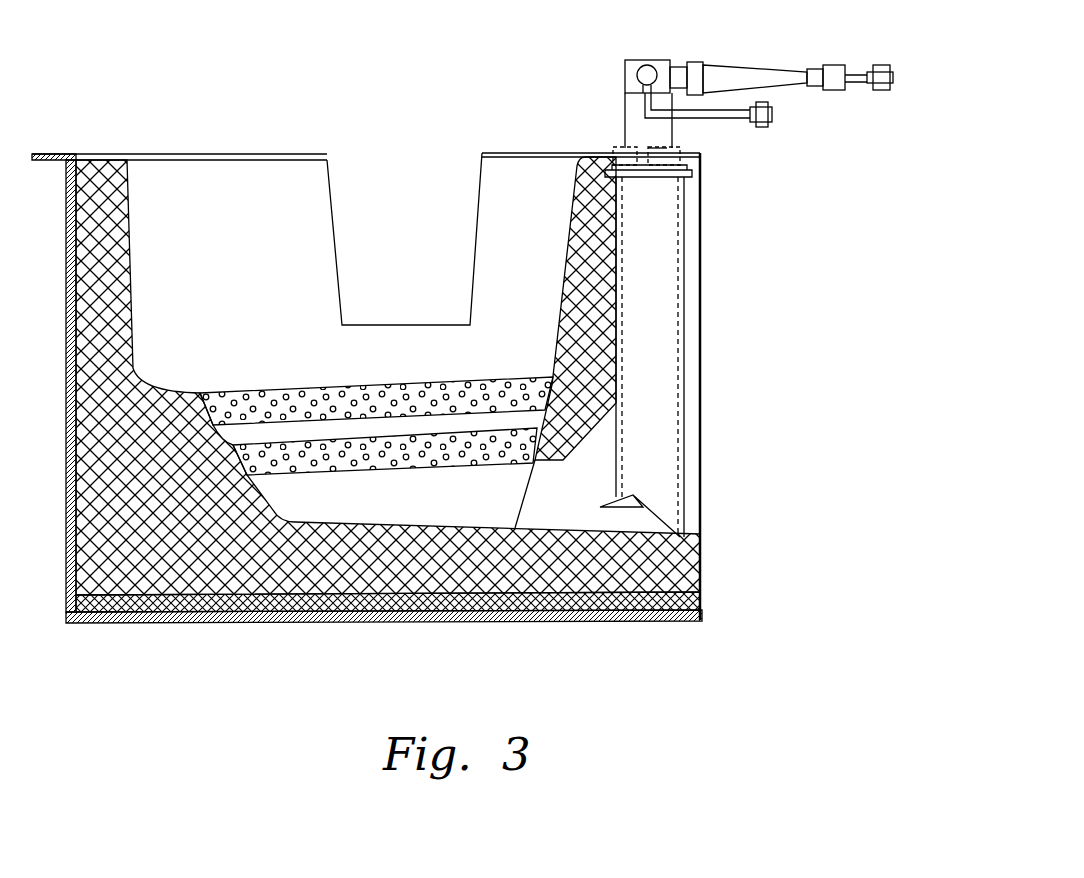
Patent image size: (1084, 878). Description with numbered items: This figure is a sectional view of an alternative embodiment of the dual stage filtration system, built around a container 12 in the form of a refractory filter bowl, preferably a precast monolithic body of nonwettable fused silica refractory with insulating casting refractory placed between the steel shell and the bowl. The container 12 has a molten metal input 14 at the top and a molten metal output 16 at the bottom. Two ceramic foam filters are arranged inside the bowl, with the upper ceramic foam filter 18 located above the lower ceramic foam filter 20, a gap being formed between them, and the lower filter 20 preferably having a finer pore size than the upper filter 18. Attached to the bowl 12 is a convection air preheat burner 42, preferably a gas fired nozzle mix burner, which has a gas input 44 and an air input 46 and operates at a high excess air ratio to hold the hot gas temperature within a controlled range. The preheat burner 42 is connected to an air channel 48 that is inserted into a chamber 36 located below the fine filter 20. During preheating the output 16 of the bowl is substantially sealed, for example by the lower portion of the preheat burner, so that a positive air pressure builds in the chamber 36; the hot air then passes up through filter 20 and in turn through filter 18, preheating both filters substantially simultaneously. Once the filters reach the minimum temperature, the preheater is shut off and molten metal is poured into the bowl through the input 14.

The container 12 is at (700, 410).
The molten metal input 14 is at (193, 182).
The molten metal output 16 is at (603, 572).
The ceramic foam filter 18 is at (235, 393).
The ceramic foam filter 20 is at (293, 458).
The chamber 36 is at (400, 495).
The convection air preheat burner 42 is at (647, 62).
The gas input 44 is at (857, 88).
The air input 46 is at (722, 118).
The air channel 48 is at (642, 312).